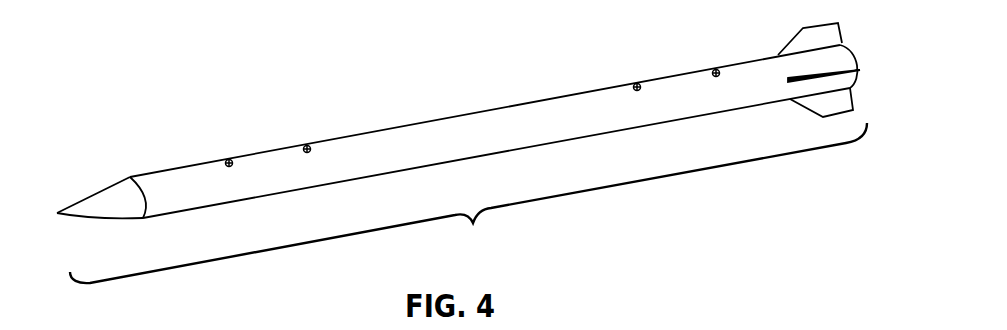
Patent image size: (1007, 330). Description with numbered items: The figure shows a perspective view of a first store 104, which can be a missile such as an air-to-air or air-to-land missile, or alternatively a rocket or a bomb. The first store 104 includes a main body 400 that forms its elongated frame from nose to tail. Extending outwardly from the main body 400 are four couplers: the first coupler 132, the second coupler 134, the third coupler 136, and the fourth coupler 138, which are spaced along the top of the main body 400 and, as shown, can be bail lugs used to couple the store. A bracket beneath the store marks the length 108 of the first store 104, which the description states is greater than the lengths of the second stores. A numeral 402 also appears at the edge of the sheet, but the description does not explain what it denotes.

The first store 104 is at (139, 168).
The length 108 is at (468, 203).
The first coupler 132 is at (228, 159).
The second coupler 134 is at (306, 145).
The third coupler 136 is at (636, 83).
The fourth coupler 138 is at (715, 69).
The main body 400 is at (487, 111).
The component (partially shown) 402 is at (739, 322).